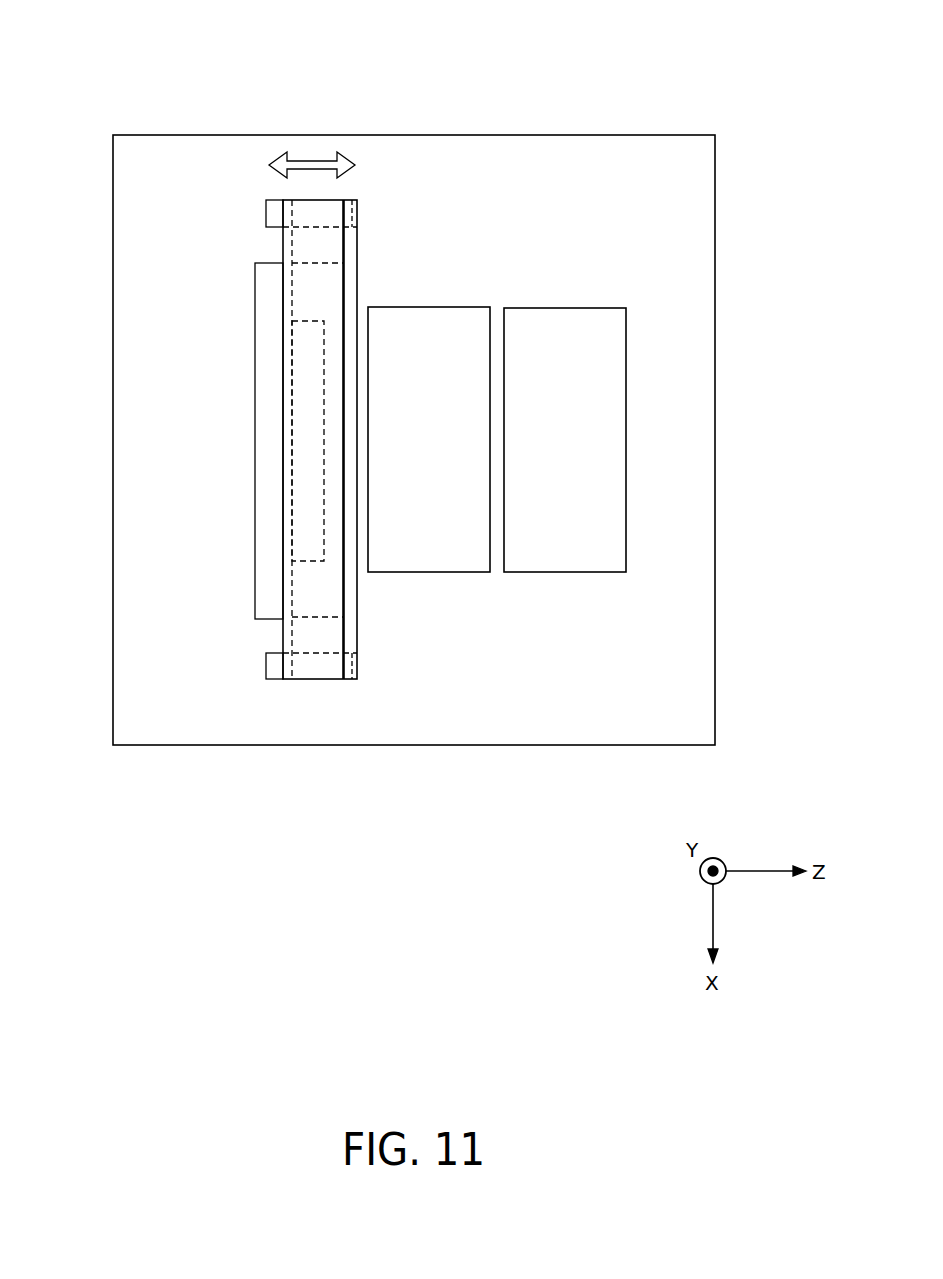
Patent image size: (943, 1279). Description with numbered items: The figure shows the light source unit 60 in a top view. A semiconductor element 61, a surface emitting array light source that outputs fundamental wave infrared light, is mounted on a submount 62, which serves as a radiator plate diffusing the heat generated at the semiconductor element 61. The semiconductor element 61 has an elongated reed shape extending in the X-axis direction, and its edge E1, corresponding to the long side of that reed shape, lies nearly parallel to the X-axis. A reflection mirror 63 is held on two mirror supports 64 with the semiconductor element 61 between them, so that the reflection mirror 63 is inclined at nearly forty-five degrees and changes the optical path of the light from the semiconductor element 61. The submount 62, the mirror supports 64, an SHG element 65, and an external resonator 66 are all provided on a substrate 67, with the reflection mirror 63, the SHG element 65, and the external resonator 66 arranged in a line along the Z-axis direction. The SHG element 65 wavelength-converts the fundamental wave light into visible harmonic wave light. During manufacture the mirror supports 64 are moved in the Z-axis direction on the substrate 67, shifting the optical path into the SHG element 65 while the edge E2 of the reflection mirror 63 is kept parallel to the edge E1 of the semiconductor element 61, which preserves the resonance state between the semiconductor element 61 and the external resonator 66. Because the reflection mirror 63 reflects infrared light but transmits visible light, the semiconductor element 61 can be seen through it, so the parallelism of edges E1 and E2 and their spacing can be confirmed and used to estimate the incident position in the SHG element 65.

The light source unit 60 is at (257, 76).
The semiconductor element 61 is at (305, 497).
The submount 62 is at (275, 591).
The reflection mirror 63 is at (316, 670).
The mirror supports 64 is at (272, 212).
The SHG element 65 is at (436, 307).
The external resonator 66 is at (549, 308).
The substrate 67 is at (693, 640).
The edge E1 is at (325, 352).
The edge E2 is at (345, 665).